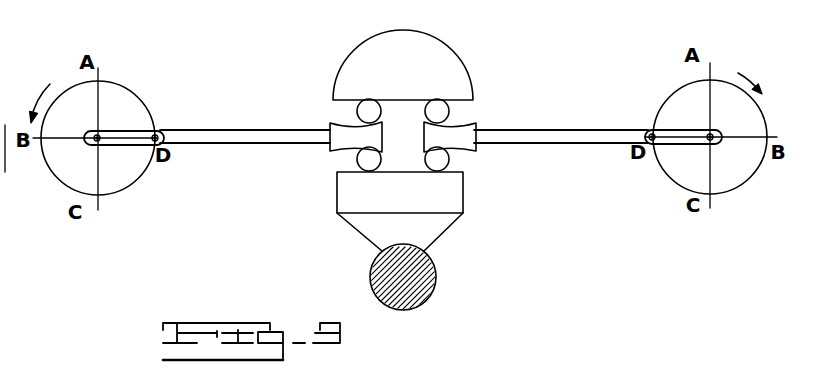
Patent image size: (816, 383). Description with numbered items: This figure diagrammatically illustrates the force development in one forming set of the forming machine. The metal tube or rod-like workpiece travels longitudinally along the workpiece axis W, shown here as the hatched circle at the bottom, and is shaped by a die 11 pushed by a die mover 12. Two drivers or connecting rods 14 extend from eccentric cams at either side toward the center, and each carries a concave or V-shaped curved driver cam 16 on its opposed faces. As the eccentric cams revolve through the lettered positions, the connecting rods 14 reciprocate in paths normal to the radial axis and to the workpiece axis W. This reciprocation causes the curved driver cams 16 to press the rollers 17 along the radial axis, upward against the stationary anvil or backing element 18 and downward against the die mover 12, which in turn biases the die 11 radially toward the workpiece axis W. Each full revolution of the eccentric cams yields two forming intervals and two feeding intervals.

The die 11 is at (375, 233).
The die mover 12 is at (450, 193).
The connecting rod 14 is at (226, 138).
The driver cam 16 is at (338, 145).
The roller 17 is at (362, 108).
The backing element 18 is at (431, 59).
The workpiece axis W is at (403, 278).